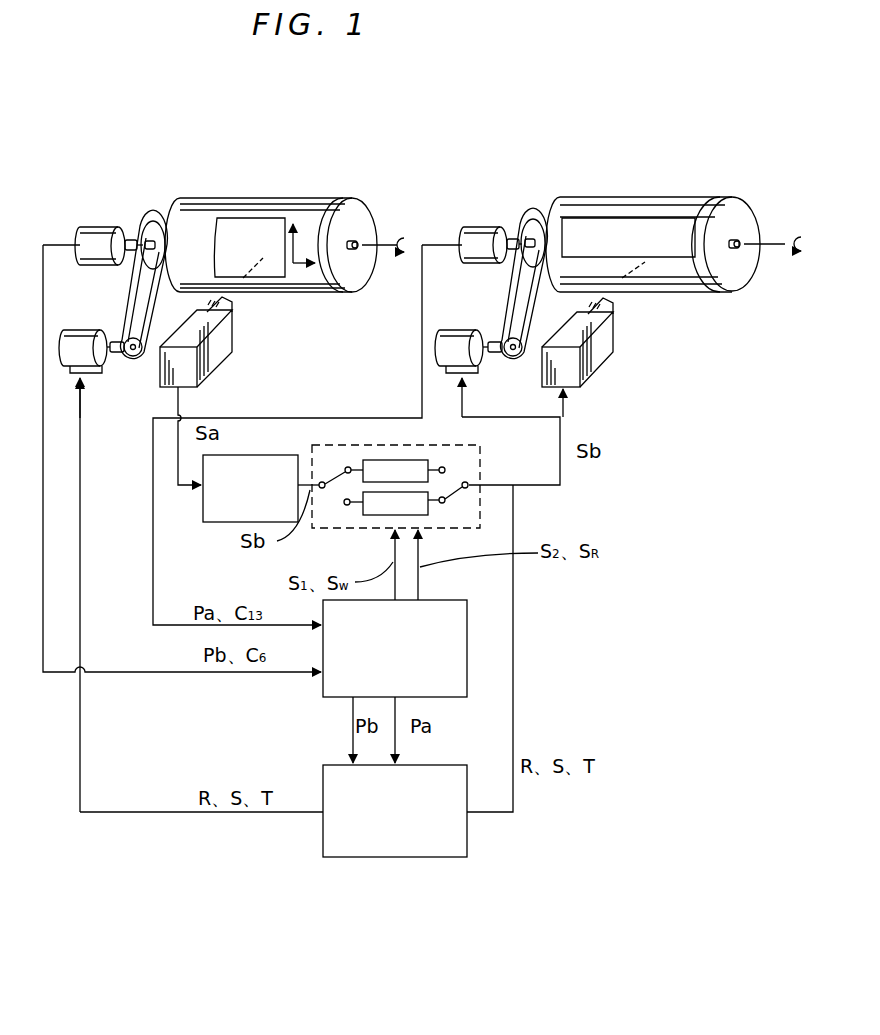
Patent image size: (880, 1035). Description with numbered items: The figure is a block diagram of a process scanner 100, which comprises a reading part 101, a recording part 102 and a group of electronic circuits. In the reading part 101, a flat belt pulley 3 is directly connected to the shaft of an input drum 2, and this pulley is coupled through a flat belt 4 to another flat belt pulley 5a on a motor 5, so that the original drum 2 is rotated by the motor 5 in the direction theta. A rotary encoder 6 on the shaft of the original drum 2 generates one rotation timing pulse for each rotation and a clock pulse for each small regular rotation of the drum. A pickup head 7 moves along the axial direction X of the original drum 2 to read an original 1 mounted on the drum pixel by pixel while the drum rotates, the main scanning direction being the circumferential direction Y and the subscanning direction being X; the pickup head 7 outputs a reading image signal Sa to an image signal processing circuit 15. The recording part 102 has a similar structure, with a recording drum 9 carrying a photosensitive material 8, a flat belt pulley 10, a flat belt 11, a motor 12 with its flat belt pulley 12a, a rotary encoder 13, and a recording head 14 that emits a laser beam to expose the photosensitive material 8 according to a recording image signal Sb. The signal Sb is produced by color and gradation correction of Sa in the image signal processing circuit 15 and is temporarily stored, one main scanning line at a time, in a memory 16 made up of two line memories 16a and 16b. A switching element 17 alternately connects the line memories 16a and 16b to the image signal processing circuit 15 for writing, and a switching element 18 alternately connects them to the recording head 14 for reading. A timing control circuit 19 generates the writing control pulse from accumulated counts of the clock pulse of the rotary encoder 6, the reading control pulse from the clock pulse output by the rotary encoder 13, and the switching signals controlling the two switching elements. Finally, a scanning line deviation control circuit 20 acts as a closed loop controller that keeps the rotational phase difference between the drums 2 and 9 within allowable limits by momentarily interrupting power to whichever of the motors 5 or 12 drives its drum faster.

The original 1 is at (226, 222).
The input drum 2 is at (318, 195).
The flat belt pulley 3 is at (149, 222).
The flat belt 4 is at (118, 307).
The motor 5 is at (110, 368).
The flat belt pulley 5a is at (143, 362).
The rotary encoder 6 is at (90, 225).
The pickup head 7 is at (205, 355).
The photosensitive material 8 is at (617, 227).
The recording drum 9 is at (722, 196).
The flat belt pulley 10 is at (536, 222).
The flat belt 11 is at (503, 283).
The motor 12 is at (483, 362).
The flat belt pulley 12a is at (518, 358).
The rotary encoder 13 is at (472, 225).
The recording head 14 is at (598, 360).
The image signal processing circuit 15 is at (256, 455).
The memory 16 is at (318, 528).
The line memory 16a is at (378, 458).
The line memory 16b is at (385, 516).
The switching element 17 is at (342, 466).
The switching element 18 is at (451, 499).
The timing control circuit 19 is at (435, 600).
The scanning line deviation control circuit 20 is at (440, 765).
The process scanner 100 is at (456, 147).
The reading part 101 is at (160, 153).
The recording part 102 is at (693, 122).